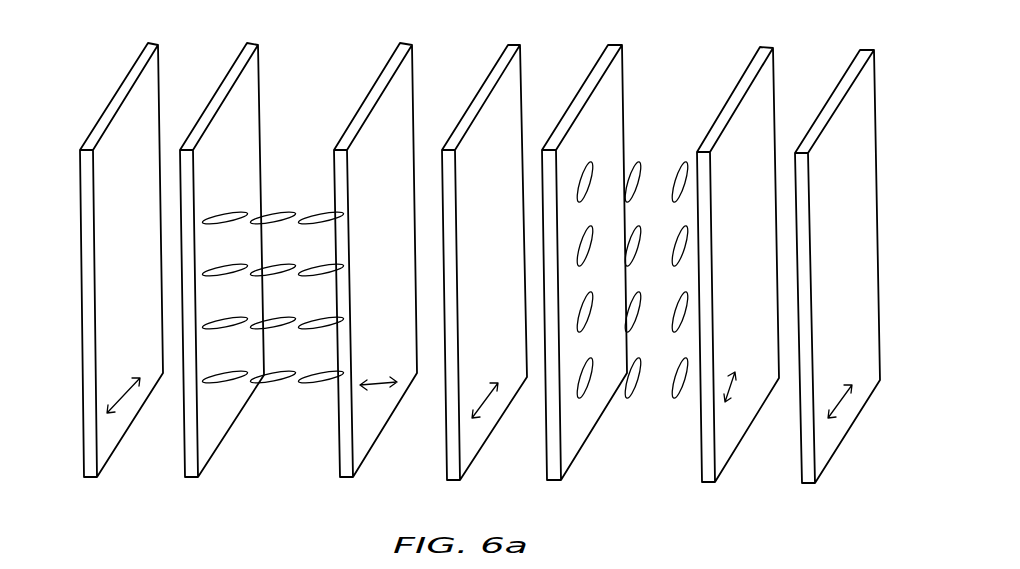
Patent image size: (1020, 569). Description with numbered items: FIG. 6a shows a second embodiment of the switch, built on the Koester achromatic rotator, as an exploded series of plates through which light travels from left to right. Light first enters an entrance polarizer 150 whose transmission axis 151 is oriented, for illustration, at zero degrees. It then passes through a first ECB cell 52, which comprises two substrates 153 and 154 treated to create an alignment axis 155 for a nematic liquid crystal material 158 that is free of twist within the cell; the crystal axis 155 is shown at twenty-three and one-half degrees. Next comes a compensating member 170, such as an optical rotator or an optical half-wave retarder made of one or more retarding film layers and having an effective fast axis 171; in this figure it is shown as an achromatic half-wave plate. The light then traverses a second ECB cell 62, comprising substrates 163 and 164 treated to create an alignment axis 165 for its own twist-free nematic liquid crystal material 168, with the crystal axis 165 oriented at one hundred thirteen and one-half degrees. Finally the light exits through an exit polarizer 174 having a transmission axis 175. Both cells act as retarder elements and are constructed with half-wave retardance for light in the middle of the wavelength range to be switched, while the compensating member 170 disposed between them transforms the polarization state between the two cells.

The entrance polarizer 150 is at (149, 43).
The first ECB cell 52 is at (413, 37).
The substrate 153 is at (191, 479).
The substrate 154 is at (346, 479).
The nematic liquid crystal material 158 is at (333, 206).
The transmission axis 151 is at (132, 382).
The alignment axis 155 is at (380, 383).
The compensating member 170 is at (508, 45).
The effective fast axis 171 is at (489, 392).
The second ECB cell 62 is at (773, 38).
The substrate 163 is at (553, 482).
The substrate 164 is at (706, 484).
The nematic liquid crystal material 168 is at (697, 151).
The alignment axis 165 is at (737, 383).
The exit polarizer 174 is at (861, 50).
The transmission axis 175 is at (845, 389).